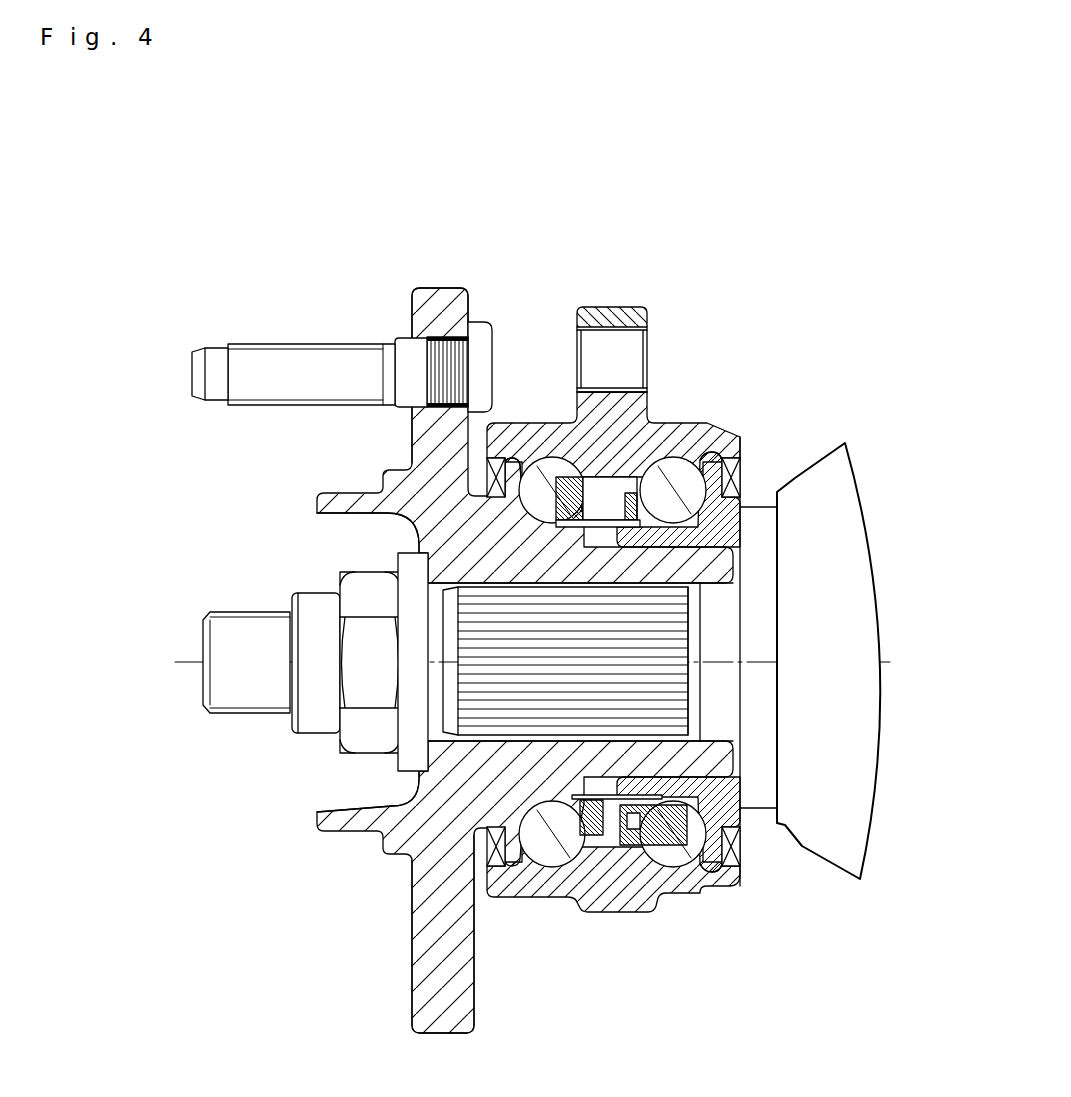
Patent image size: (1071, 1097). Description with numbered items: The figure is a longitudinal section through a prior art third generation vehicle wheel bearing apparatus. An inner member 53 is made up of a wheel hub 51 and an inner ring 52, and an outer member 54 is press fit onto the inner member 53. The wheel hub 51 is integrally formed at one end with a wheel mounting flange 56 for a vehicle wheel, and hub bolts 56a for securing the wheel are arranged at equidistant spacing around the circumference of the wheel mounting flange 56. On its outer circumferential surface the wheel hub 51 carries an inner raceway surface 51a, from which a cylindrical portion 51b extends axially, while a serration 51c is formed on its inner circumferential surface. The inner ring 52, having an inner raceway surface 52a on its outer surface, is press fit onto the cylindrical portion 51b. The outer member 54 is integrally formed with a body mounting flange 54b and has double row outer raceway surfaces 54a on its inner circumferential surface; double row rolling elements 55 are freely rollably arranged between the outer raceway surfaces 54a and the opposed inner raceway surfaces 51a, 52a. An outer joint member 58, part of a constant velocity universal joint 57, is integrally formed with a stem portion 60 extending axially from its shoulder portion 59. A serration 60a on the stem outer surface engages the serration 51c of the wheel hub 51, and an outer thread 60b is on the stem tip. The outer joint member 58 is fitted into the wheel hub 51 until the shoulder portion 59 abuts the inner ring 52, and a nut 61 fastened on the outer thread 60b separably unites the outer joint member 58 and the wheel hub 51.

The wheel hub 51 is at (417, 498).
The inner raceway surface 51a is at (515, 478).
The cylindrical portion 51b is at (742, 548).
The serration 51c is at (500, 592).
The inner ring 52 is at (745, 505).
The inner raceway surface 52a is at (715, 470).
The inner member 53 is at (388, 546).
The outer member 54 is at (550, 433).
The outer raceway surfaces 54a is at (530, 480).
The body mounting flange 54b is at (608, 316).
The rolling elements 55 is at (670, 857).
The wheel mounting flange 56 is at (430, 318).
The hub bolts 56a is at (335, 367).
The constant velocity universal joint 57 is at (838, 641).
The outer joint member 58 is at (839, 821).
The shoulder portion 59 is at (762, 790).
The stem portion 60 is at (522, 787).
The serration 60a is at (500, 697).
The outer thread 60b is at (240, 716).
The nut 61 is at (357, 727).